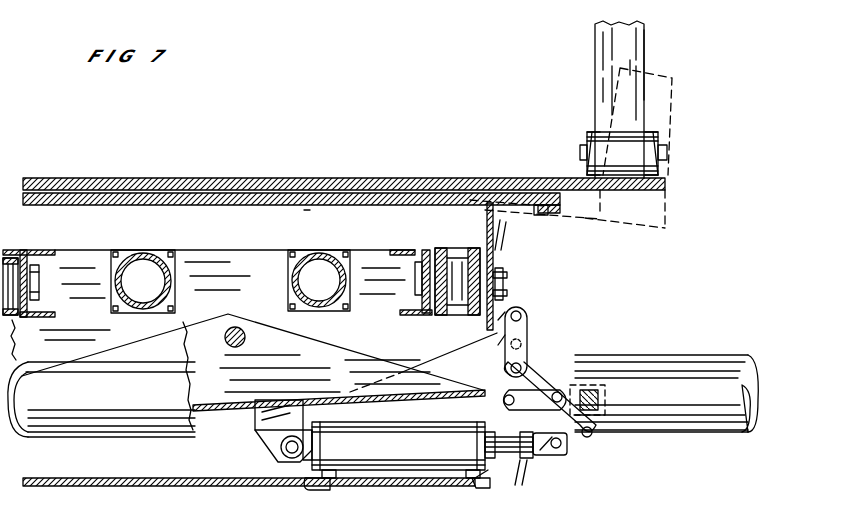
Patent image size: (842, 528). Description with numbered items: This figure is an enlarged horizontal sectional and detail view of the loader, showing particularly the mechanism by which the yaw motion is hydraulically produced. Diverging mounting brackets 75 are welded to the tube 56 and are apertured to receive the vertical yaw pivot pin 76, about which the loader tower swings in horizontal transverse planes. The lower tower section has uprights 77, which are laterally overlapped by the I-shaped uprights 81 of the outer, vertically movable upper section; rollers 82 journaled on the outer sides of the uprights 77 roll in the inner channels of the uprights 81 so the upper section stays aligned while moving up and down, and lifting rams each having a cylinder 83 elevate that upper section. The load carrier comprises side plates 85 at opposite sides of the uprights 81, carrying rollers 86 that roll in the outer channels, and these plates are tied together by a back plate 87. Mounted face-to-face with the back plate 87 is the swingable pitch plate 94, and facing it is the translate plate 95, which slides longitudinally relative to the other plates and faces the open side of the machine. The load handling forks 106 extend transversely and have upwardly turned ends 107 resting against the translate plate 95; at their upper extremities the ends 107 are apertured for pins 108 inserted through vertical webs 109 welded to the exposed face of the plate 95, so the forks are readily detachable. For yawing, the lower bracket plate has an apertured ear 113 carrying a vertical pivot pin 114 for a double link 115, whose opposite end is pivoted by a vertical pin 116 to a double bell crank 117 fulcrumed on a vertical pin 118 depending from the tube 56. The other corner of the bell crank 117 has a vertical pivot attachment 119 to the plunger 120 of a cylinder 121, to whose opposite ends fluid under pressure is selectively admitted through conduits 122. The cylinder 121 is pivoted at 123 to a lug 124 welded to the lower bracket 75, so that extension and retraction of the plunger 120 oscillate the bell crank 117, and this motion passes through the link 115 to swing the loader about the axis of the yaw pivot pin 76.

The tube 56 is at (52, 430).
The mounting brackets 75 is at (330, 348).
The yaw pivot pin 76 is at (236, 327).
The uprights 77 is at (47, 250).
The uprights 81 is at (452, 250).
The rollers 82 is at (10, 256).
The cylinder 83 is at (172, 270).
The side plates 85 is at (496, 254).
The rollers 86 is at (506, 278).
The back plate 87 is at (312, 207).
The pitch plate 94 is at (300, 195).
The translate plate 95 is at (361, 178).
The load handling forks 106 is at (645, 52).
The upwardly turned ends 107 is at (635, 135).
The pins 108 is at (670, 153).
The vertical webs 109 is at (592, 135).
The apertured ear 113 is at (528, 318).
The vertical pivot pin 114 is at (508, 324).
The double link 115 is at (534, 336).
The vertical pin 116 is at (528, 368).
The double bell crank 117 is at (515, 464).
The vertical pin 118 is at (598, 385).
The vertical pivot attachment 119 is at (562, 456).
The plunger 120 is at (500, 456).
The cylinder 121 is at (411, 462).
The conduits 122 is at (250, 486).
The pivot 123 is at (305, 486).
The lug 124 is at (272, 438).